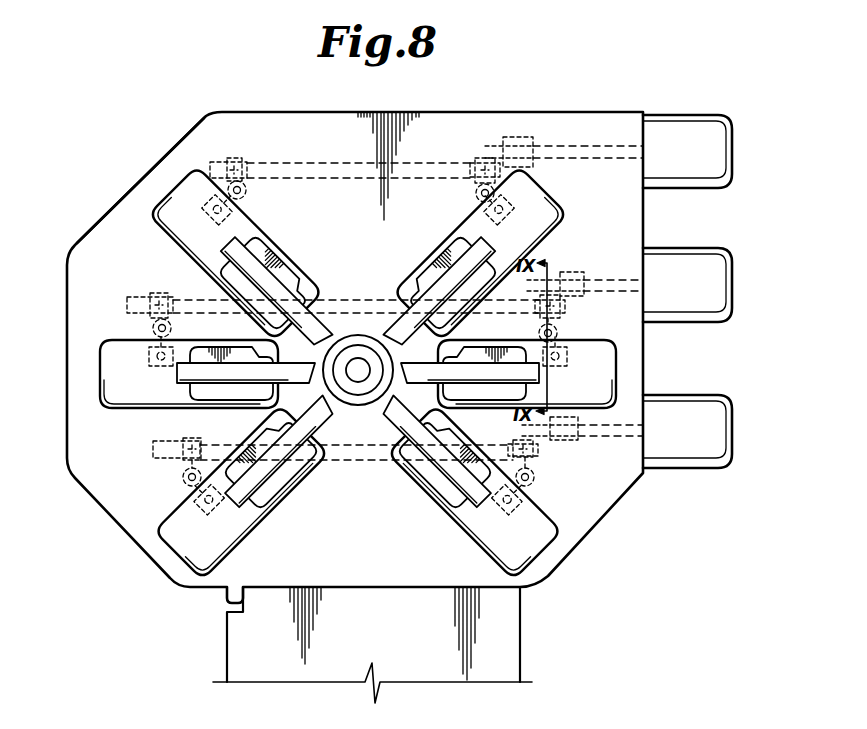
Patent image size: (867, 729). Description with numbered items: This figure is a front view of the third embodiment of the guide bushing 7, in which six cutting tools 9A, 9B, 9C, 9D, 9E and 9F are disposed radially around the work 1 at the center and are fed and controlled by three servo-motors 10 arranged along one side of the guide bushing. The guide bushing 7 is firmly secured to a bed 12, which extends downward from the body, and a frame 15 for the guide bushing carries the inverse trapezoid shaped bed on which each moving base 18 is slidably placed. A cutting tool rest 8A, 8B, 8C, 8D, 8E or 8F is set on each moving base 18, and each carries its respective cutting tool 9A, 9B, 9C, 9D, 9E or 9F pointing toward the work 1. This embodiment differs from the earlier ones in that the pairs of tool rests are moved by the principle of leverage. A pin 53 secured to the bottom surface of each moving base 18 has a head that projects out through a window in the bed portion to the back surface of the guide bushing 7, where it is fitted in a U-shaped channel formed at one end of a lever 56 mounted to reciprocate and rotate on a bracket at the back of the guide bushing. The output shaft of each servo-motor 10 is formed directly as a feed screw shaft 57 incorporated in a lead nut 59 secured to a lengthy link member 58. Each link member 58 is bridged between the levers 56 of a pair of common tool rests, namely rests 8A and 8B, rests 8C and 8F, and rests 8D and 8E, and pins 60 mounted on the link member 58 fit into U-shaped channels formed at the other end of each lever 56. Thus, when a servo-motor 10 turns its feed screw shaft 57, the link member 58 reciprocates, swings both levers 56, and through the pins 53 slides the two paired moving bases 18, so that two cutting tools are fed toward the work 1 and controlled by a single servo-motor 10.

The work 1 is at (345, 377).
The guide bushing 7 is at (541, 110).
The cutting tool rest 8A is at (275, 272).
The cutting tool rest 8B is at (440, 250).
The cutting tool rest 8C is at (445, 345).
The cutting tool rest 8D is at (445, 481).
The cutting tool rest 8E is at (273, 490).
The cutting tool rest 8F is at (223, 397).
The cutting tool 9A is at (277, 296).
The cutting tool 9B is at (382, 331).
The cutting tool 9C is at (415, 368).
The cutting tool 9D is at (405, 415).
The cutting tool 9E is at (333, 413).
The cutting tool 9F is at (228, 377).
The servo-motor 10 is at (722, 122).
The bed 12 is at (513, 627).
The frame 15 is at (138, 192).
The moving base 18 is at (150, 213).
The pin 53 is at (214, 221).
The lever 56 is at (247, 199).
The feed screw shaft 57 is at (600, 150).
The link member 58 is at (323, 155).
The lead nut 59 is at (513, 137).
The pin 60 is at (212, 163).